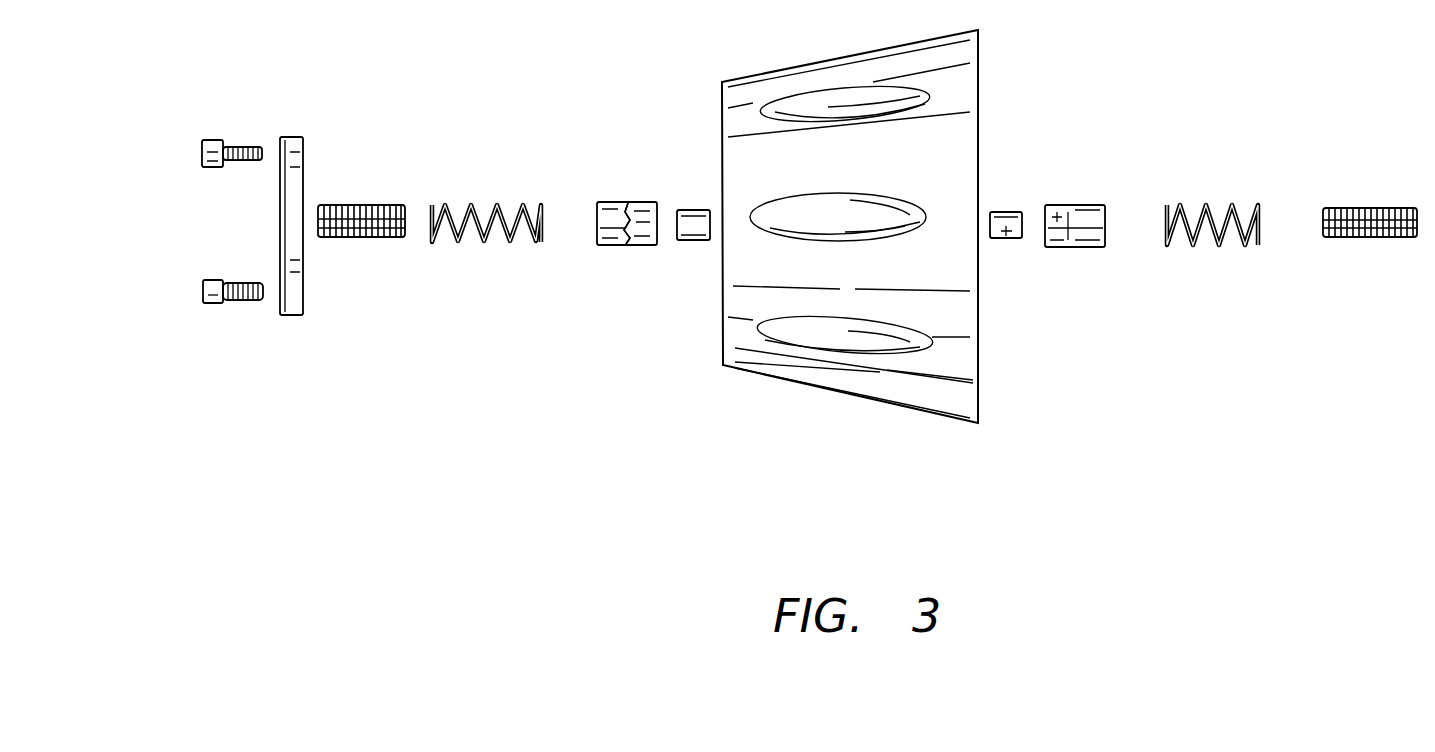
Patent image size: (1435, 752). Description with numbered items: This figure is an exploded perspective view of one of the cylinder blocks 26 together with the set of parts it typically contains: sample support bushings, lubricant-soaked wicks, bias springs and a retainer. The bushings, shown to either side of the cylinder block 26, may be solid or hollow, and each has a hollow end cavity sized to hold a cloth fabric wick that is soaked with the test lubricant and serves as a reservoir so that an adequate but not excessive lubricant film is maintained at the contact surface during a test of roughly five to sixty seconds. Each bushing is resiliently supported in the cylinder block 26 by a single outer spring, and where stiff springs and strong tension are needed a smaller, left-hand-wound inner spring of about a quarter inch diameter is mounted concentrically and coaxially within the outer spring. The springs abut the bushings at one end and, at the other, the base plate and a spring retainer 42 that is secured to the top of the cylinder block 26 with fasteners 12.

The fasteners 12 is at (217, 168).
The cylinder block 26 is at (757, 368).
The spring retainer 42 is at (287, 307).